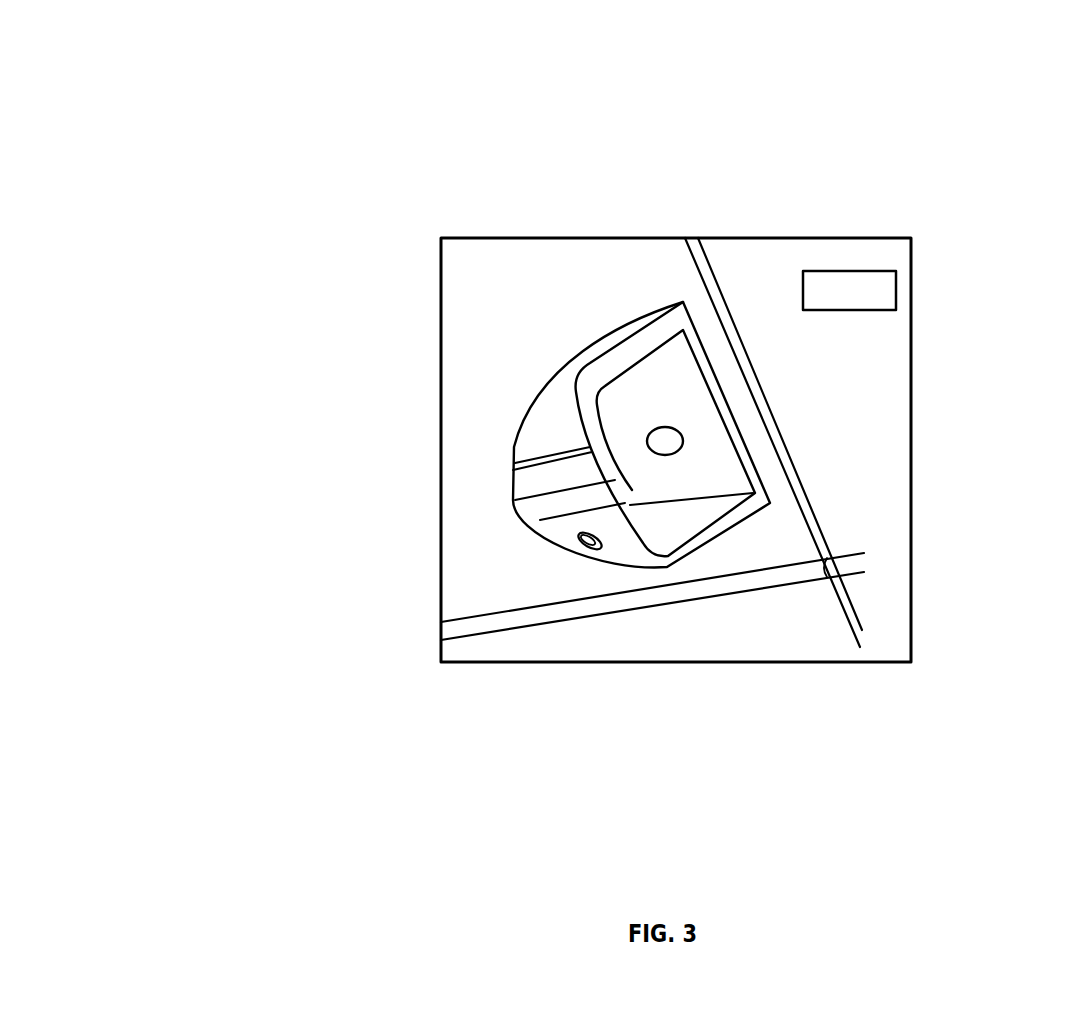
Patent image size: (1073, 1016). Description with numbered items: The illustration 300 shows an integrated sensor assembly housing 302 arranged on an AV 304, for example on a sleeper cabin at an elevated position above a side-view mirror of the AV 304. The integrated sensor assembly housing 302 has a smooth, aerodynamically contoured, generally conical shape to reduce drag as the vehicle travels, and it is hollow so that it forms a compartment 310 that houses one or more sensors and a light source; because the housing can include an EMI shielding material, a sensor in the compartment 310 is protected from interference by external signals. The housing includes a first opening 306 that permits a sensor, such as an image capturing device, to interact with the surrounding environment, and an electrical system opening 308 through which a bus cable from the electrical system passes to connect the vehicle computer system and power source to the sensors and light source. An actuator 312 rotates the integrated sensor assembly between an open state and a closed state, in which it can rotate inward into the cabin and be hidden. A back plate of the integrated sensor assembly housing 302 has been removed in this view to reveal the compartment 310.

The illustration 300 is at (160, 109).
The integrated sensor assembly housing 302 is at (550, 425).
The AV 304 is at (463, 390).
The first opening 306 is at (583, 545).
The electrical system opening 308 is at (665, 441).
The compartment 310 is at (677, 390).
The actuator 312 is at (840, 268).